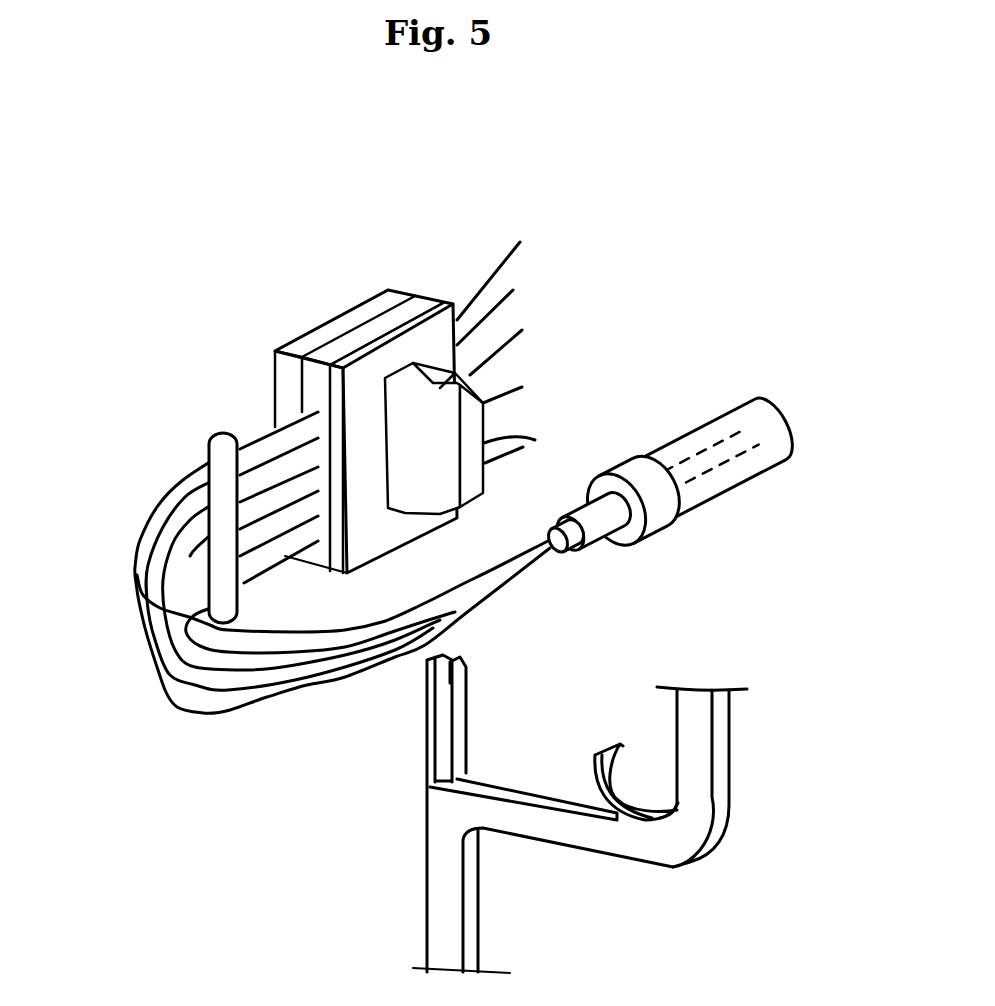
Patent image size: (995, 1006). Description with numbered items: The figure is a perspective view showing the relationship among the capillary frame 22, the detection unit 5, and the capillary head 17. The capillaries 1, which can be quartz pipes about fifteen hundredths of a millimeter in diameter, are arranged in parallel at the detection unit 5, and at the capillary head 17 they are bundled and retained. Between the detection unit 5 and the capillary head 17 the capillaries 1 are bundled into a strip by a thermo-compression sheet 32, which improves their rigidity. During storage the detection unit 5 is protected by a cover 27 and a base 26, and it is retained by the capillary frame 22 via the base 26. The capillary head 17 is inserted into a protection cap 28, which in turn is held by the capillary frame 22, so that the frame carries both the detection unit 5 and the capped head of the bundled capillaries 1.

The capillaries 1 is at (178, 597).
The detection unit 5 is at (377, 330).
The base 26 is at (352, 360).
The cover 27 is at (380, 303).
The thermo-compression sheet 32 is at (220, 450).
The protection cap 28 is at (786, 420).
The capillary head 17 is at (582, 530).
The capillary frame 22 is at (700, 806).